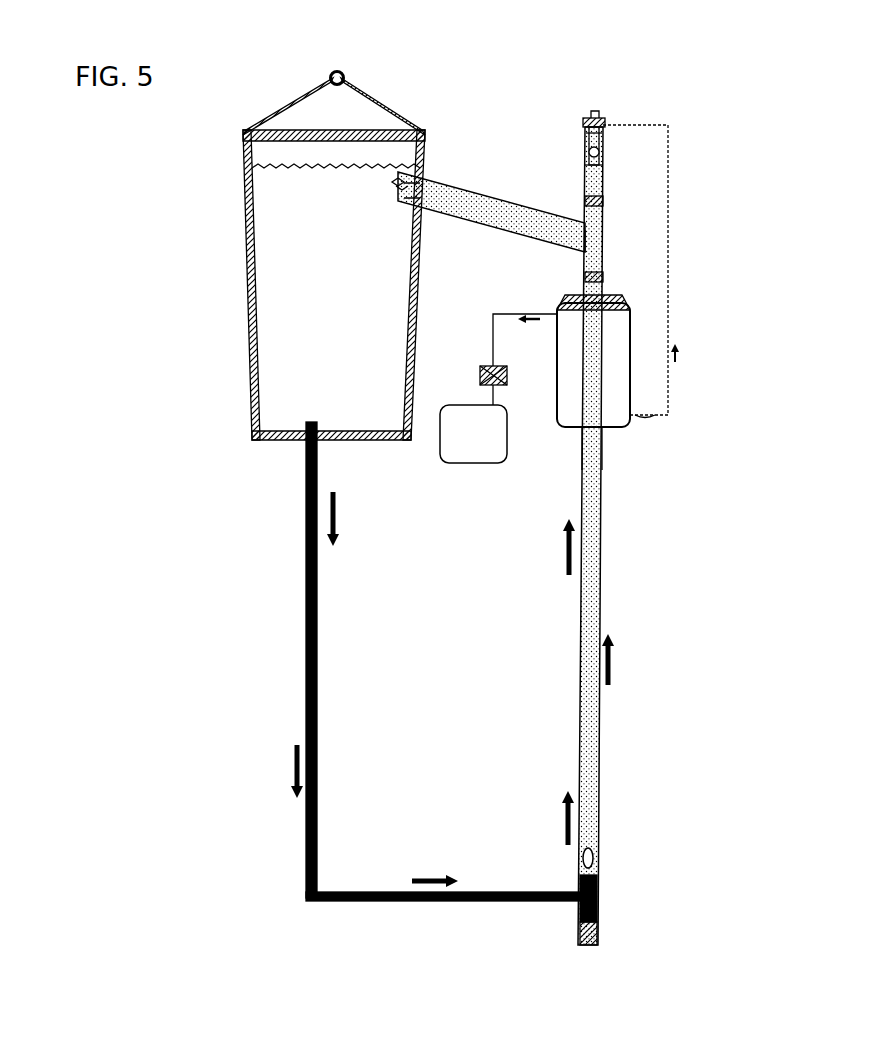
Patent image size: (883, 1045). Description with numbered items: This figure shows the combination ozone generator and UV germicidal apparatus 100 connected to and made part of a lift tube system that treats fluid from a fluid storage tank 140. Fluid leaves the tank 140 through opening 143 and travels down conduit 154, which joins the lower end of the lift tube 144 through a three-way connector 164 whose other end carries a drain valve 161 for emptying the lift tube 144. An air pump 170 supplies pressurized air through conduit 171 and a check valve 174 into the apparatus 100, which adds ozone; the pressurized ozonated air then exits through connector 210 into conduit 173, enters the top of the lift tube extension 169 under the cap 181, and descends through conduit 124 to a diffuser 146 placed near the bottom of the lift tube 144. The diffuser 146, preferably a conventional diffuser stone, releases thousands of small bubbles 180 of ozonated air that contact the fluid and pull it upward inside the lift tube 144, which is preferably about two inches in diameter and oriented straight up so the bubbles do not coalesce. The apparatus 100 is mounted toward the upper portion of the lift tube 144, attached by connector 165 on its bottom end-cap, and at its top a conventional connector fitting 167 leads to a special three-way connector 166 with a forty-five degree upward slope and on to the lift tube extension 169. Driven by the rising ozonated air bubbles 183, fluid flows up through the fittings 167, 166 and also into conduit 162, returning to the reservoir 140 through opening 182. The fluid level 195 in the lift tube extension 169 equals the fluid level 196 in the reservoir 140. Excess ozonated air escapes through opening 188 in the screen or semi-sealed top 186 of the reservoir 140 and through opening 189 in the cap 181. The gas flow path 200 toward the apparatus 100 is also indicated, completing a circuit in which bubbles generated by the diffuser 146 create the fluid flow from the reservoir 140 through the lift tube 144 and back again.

The apparatus 100 is at (624, 428).
The conduit 124 is at (605, 187).
The fluid storage tank 140 is at (247, 212).
The opening 143 is at (308, 432).
The lift tube 144 is at (599, 742).
The diffuser 146 is at (598, 841).
The conduit 154 is at (444, 902).
The drain valve 161 is at (597, 943).
The conduit 162 is at (500, 226).
The 3-way connector 164 is at (581, 893).
The connector 165 is at (603, 448).
The three-way connector 166 is at (585, 250).
The connector fitting 167 is at (604, 277).
The lift tube 169 is at (604, 204).
The air pump 170 is at (470, 465).
The conduit 171 is at (492, 360).
The conduit 173 is at (669, 246).
The check valve 174 is at (503, 369).
The bubbles 180 is at (588, 138).
The cap 181 is at (590, 115).
The opening 182 is at (422, 193).
The ozonated air bubbles 183 is at (402, 176).
The top 186 is at (311, 100).
The opening 188 is at (339, 71).
The opening 189 is at (600, 111).
The fluid level 195 is at (590, 162).
The fluid level 196 is at (245, 168).
The gas flow line 200 is at (557, 312).
The connector 210 is at (646, 420).